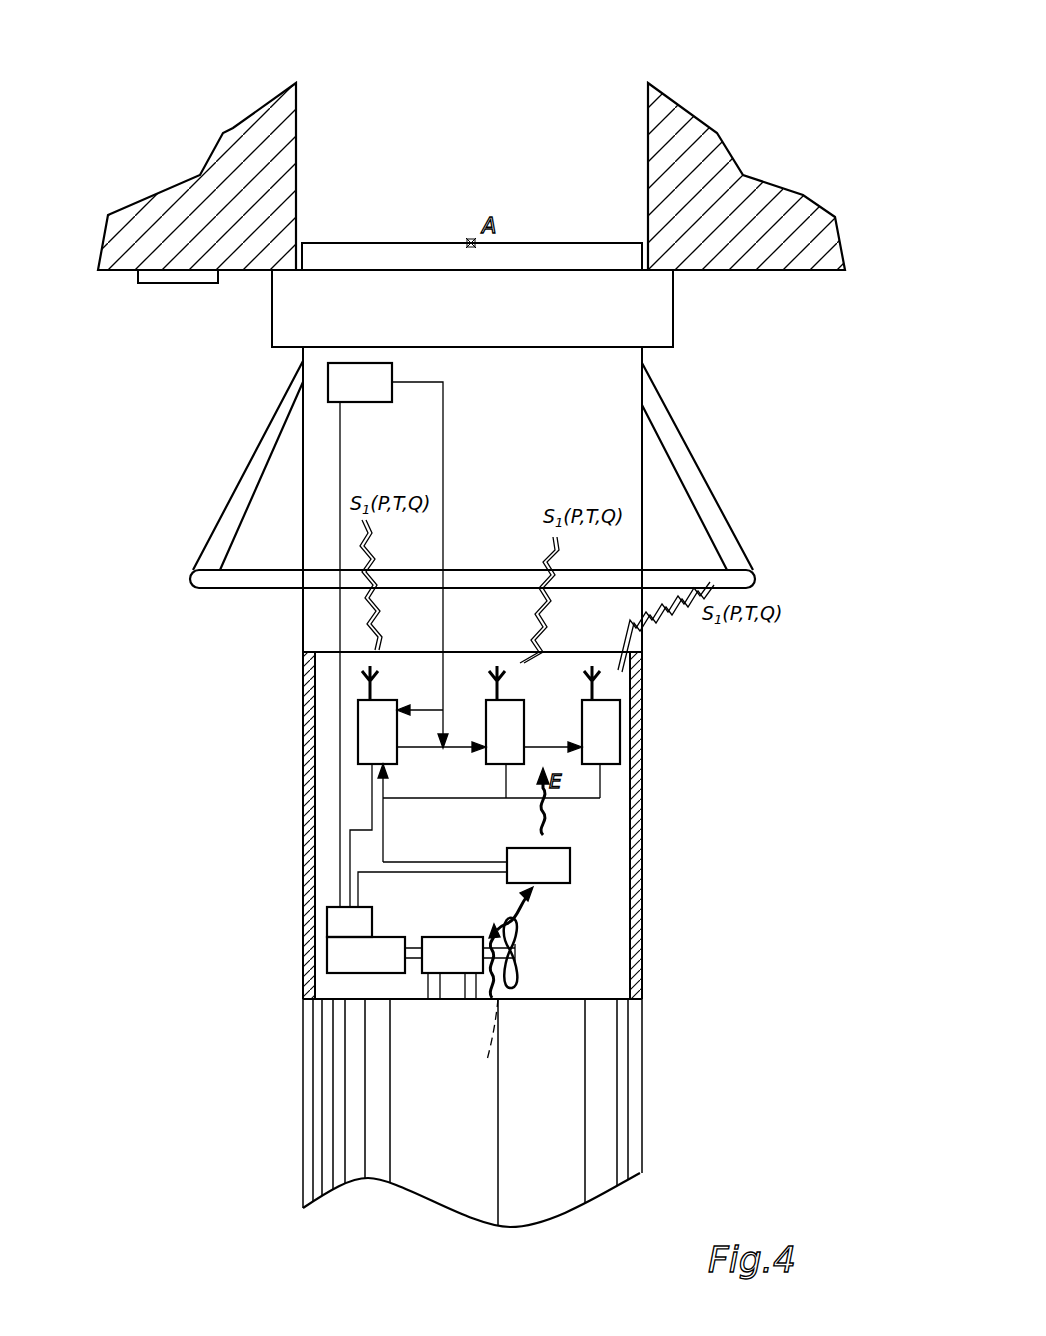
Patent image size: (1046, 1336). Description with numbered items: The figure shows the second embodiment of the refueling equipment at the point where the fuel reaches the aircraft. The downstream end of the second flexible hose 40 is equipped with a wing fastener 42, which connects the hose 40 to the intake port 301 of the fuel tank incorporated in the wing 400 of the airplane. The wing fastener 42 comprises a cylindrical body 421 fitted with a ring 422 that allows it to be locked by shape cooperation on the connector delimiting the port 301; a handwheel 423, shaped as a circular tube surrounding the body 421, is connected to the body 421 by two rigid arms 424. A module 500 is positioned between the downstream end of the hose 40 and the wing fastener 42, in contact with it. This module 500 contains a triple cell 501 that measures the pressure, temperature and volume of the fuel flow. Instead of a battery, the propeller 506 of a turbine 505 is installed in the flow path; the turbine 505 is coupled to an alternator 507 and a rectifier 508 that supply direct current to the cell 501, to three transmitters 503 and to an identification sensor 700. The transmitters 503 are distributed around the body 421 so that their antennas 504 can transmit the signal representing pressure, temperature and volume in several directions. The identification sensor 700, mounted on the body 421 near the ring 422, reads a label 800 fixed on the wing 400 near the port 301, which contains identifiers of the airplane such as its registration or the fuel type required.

The intake port 301 is at (390, 104).
The wing 400 is at (148, 200).
The label 800 is at (180, 280).
The ring 422 is at (637, 312).
The rigid arms 424 is at (238, 510).
The handwheel 423 is at (268, 578).
The cylindrical body 421 is at (325, 718).
The wing fastener 42 is at (579, 673).
The module 500 is at (553, 825).
The second flexible hose 40 is at (545, 1113).
The identification sensor 700 is at (388, 635).
The transmitters 503 is at (485, 803).
The antennas 504 is at (412, 679).
The cell 501 is at (464, 877).
The rectifier 508 is at (349, 922).
The alternator 507 is at (374, 955).
The turbine 505 is at (468, 968).
The propeller 506 is at (515, 982).